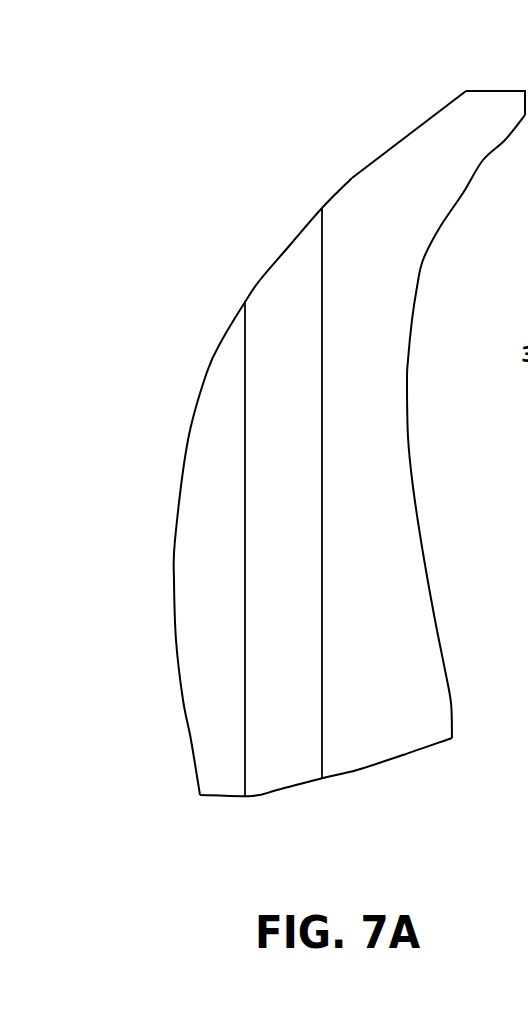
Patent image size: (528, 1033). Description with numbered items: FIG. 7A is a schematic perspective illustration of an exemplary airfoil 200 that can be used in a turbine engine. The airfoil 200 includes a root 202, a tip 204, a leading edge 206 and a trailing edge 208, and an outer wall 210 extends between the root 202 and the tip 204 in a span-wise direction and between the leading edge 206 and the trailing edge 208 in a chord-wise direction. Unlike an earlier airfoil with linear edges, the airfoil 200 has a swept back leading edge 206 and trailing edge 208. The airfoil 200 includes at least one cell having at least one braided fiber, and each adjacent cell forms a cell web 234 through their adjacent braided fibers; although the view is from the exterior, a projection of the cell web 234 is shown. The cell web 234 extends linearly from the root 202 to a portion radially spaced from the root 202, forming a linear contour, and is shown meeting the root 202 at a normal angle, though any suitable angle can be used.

The airfoil 200 is at (197, 111).
The root 202 is at (355, 772).
The tip 204 is at (493, 90).
The leading edge 206 is at (358, 173).
The trailing edge 208 is at (418, 288).
The outer wall 210 is at (430, 117).
The cell web 234 is at (322, 327).